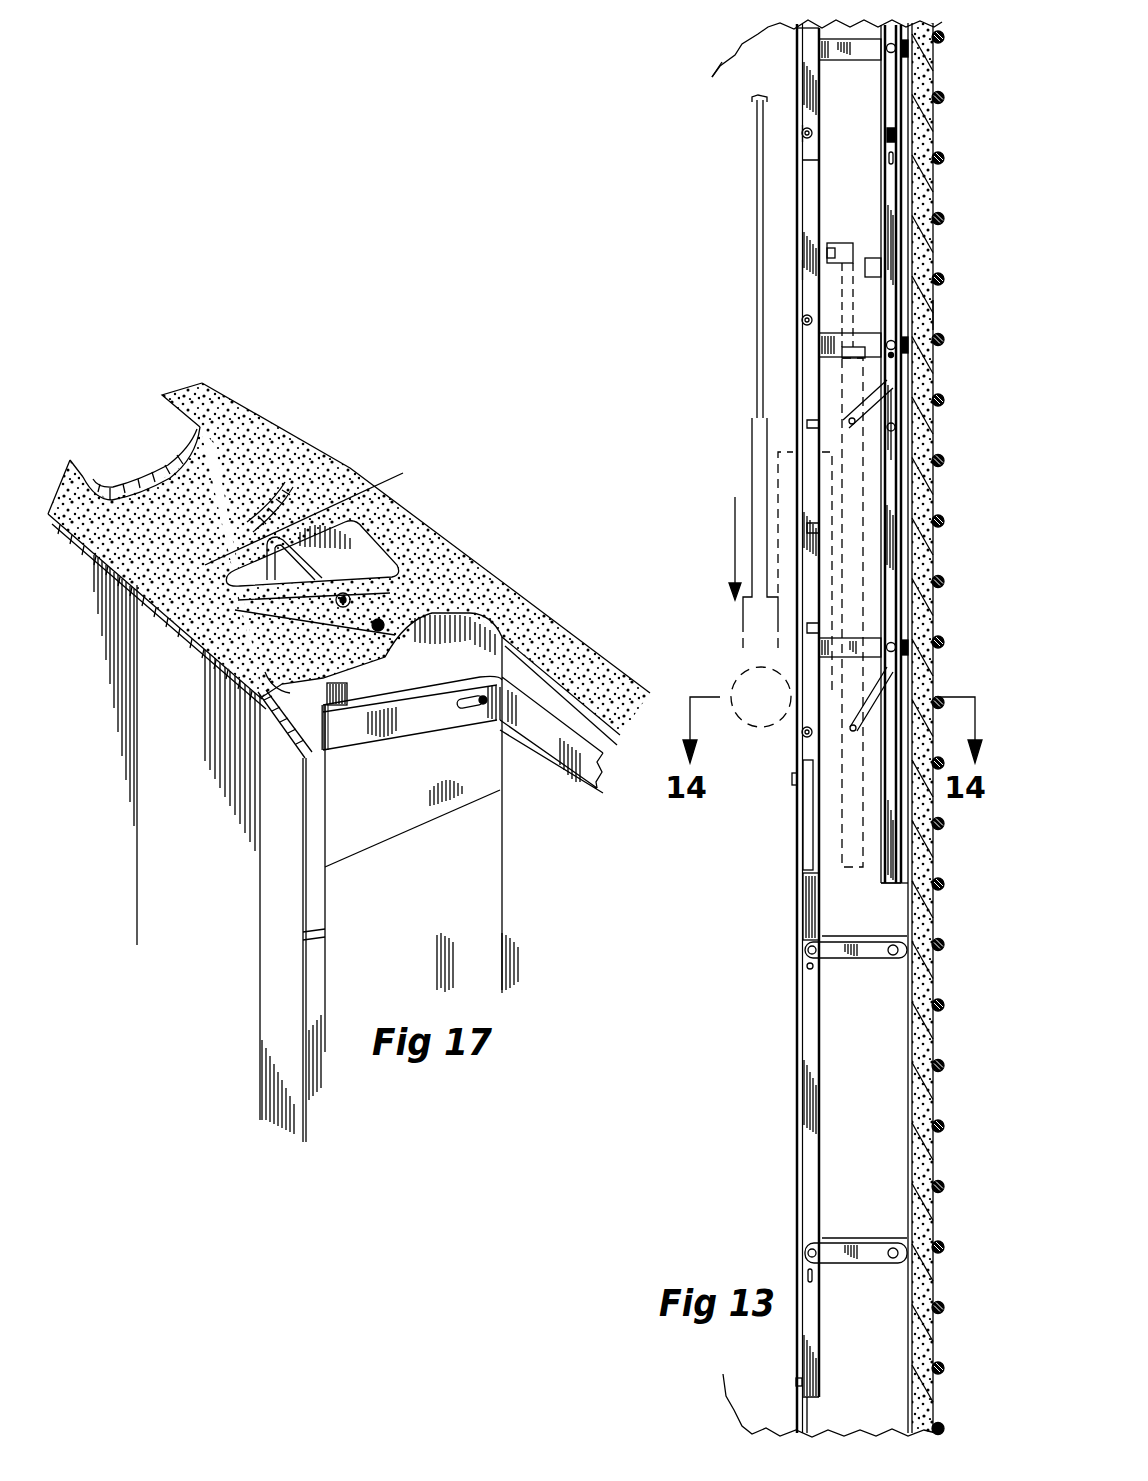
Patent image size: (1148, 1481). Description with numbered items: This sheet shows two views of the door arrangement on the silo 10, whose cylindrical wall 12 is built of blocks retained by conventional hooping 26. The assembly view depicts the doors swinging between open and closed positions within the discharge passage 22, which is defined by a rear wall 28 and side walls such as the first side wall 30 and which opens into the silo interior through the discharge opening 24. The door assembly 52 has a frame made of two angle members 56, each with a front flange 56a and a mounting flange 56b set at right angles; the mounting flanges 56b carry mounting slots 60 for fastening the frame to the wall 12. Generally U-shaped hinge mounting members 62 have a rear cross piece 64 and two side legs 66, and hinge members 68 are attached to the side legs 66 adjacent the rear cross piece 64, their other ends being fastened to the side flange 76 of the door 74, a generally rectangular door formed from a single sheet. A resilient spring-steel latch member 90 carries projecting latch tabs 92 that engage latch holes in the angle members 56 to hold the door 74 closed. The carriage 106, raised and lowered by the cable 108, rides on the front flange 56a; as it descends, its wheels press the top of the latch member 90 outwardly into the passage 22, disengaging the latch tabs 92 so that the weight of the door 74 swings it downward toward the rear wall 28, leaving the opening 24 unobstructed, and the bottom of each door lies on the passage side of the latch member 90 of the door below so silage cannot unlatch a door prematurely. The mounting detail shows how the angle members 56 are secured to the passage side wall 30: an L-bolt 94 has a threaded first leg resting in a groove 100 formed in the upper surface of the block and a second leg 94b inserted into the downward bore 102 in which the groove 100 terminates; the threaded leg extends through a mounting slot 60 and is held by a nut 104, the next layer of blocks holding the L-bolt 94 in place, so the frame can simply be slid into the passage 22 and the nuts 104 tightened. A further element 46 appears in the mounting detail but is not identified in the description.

In FIG. 13, the silo 10 is at (947, 113).
In FIG. 17, the silo 10 is at (300, 410).
In FIG. 13, the cylindrical wall 12 is at (940, 197).
In FIG. 17, the cylindrical wall 12 is at (548, 610).
In FIG. 13, the discharge passage 22 is at (880, 1092).
In FIG. 17, the discharge passage 22 is at (421, 921).
In FIG. 13, the discharge opening 24 is at (801, 85).
In FIG. 13, the hooping 26 is at (942, 222).
In FIG. 13, the rear wall 28 is at (934, 312).
In FIG. 17, the rear wall 28 is at (604, 653).
In FIG. 17, the first side wall 30 is at (420, 841).
In FIG. 17, the wall 46 is at (196, 735).
In FIG. 13, the door assembly 52 is at (789, 117).
In FIG. 13, the angle members 56 is at (796, 227).
In FIG. 17, the angle members 56 is at (260, 994).
In FIG. 13, the front flange 56a is at (798, 270).
In FIG. 13, the mounting flange 56b is at (814, 288).
In FIG. 17, the mounting flange 56b is at (322, 877).
In FIG. 13, the mounting slots 60 is at (813, 134).
In FIG. 17, the mounting slots 60 is at (348, 692).
In FIG. 13, the hinge mounting members 62 is at (848, 661).
In FIG. 17, the hinge mounting members 62 is at (527, 748).
In FIG. 13, the rear cross piece 64 is at (910, 50).
In FIG. 17, the rear cross piece 64 is at (567, 778).
In FIG. 13, the side legs 66 is at (862, 57).
In FIG. 17, the side legs 66 is at (412, 722).
In FIG. 13, the hinge members 68 is at (880, 111).
In FIG. 13, the door 74 is at (880, 168).
In FIG. 13, the side flange 76 is at (881, 884).
In FIG. 13, the latch member 90 is at (873, 257).
In FIG. 13, the latch tabs 92 is at (798, 779).
In FIG. 17, the L-bolts 94 is at (399, 467).
In FIG. 17, the second leg 94b is at (240, 561).
In FIG. 17, the groove 100 is at (288, 692).
In FIG. 17, the downward bore 102 is at (270, 673).
In FIG. 13, the nut 104 is at (798, 138).
In FIG. 17, the nut 104 is at (466, 563).
In FIG. 13, the carriage 106 is at (744, 470).
In FIG. 13, the cable 108 is at (757, 200).